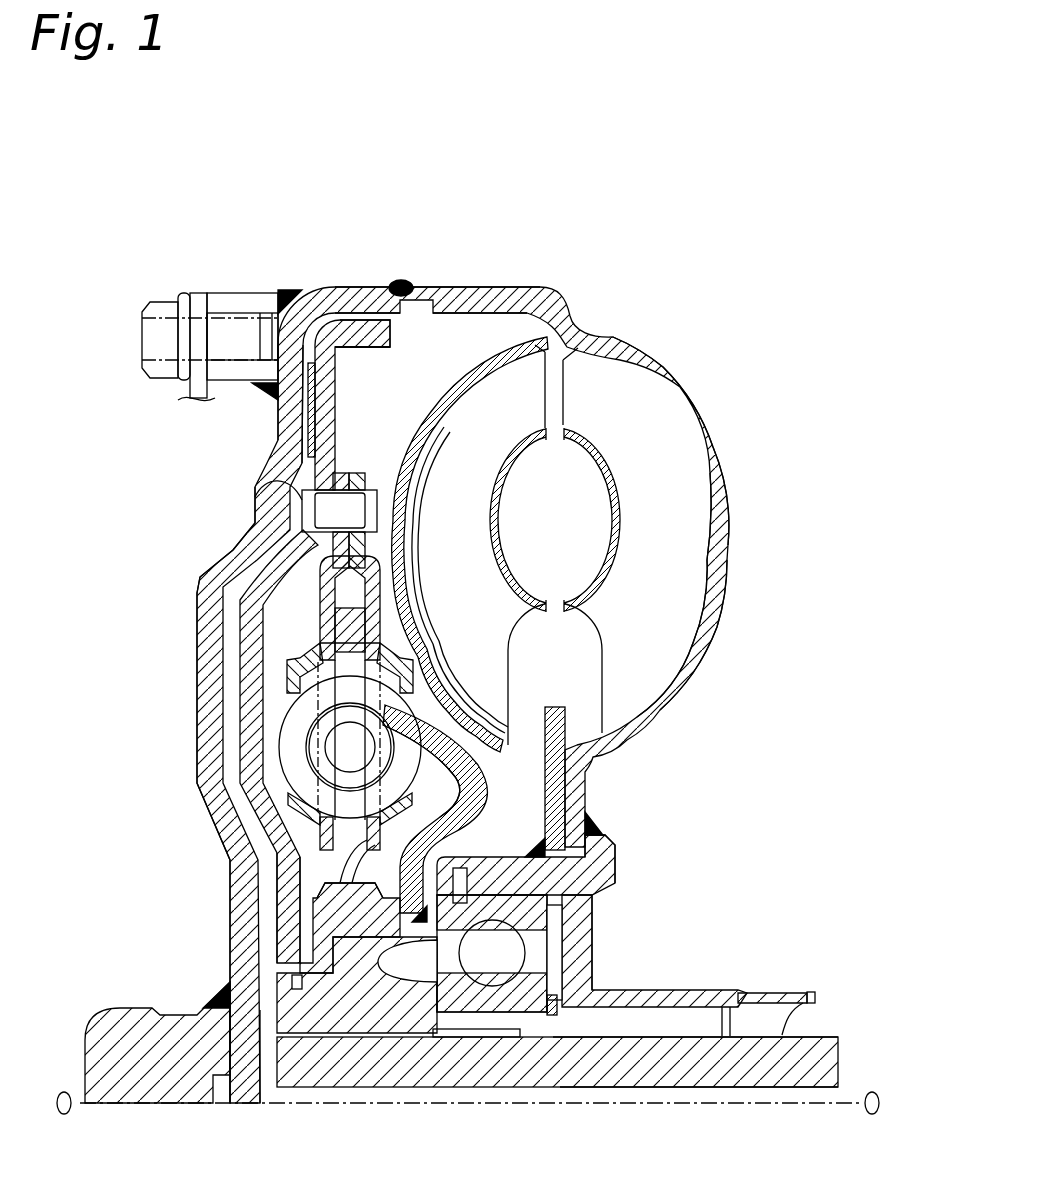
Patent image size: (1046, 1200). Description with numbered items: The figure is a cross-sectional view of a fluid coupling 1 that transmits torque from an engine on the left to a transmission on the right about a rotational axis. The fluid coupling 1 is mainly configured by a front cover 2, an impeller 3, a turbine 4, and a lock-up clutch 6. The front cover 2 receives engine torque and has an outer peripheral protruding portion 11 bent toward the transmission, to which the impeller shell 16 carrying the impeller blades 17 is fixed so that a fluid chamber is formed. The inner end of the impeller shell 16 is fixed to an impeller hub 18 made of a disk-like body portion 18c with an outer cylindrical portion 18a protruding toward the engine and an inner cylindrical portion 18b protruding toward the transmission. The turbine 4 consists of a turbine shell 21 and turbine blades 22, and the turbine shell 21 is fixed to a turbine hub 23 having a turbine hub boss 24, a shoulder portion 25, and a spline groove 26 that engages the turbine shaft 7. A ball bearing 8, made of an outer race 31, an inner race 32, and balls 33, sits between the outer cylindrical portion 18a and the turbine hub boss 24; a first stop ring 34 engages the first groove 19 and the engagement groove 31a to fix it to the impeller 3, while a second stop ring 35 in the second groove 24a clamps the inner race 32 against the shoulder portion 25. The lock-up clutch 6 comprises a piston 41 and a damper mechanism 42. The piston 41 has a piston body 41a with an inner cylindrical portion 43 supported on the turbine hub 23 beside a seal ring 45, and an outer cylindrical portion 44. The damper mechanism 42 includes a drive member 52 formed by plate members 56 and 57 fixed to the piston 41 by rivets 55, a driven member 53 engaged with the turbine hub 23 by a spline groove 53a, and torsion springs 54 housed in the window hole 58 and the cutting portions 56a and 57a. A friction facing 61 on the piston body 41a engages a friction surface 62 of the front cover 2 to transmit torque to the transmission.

The fluid coupling 1 is at (618, 244).
The front cover 2 is at (190, 575).
The impeller 3 is at (628, 328).
The turbine 4 is at (440, 368).
The lock-up clutch 6 is at (352, 445).
The turbine shaft 7 is at (815, 998).
The ball bearing 8 is at (550, 1025).
The outer peripheral protruding portion 11 is at (385, 290).
The impeller shell 16 is at (690, 430).
The impeller blades 17 is at (677, 470).
The impeller hub 18 is at (660, 968).
The outer cylindrical portion 18a is at (578, 858).
The inner cylindrical portion 18b is at (700, 972).
The body portion 18c is at (600, 920).
The first groove 19 is at (455, 870).
The turbine shell 21 is at (490, 350).
The turbine blades 22 is at (483, 512).
The turbine hub 23 is at (257, 1025).
The turbine hub boss 24 is at (500, 1025).
The second groove 24a is at (572, 1040).
The shoulder portion 25 is at (480, 1030).
The spline groove 26 is at (370, 1040).
The outer race 31 is at (557, 900).
The engagement groove 31a is at (592, 870).
The inner race 32 is at (530, 962).
The balls 33 is at (530, 942).
The first stop ring 34 is at (526, 855).
The second stop ring 35 is at (635, 1012).
The piston 41 is at (245, 690).
The piston body 41a is at (290, 850).
The damper mechanism 42 is at (425, 697).
The inner cylindrical portion 43 is at (315, 975).
The outer cylindrical portion 44 is at (350, 348).
The seal ring 45 is at (280, 960).
The drive member 52 is at (393, 622).
The driven member 53 is at (300, 882).
The spline groove 53a is at (295, 920).
The torsion springs 54 is at (300, 643).
The rivets 55 is at (253, 497).
The plate member 56 is at (300, 557).
The cutting portions 56a is at (290, 780).
The plate member 57 is at (400, 583).
The cutting portions 57a is at (395, 772).
The window hole 58 is at (275, 872).
The friction facing 61 is at (300, 368).
The friction surface 62 is at (300, 378).